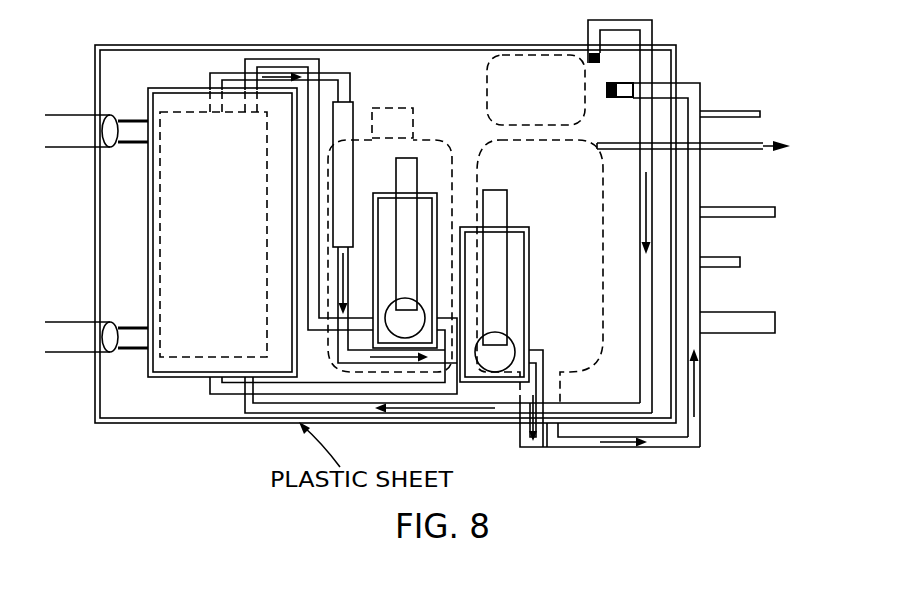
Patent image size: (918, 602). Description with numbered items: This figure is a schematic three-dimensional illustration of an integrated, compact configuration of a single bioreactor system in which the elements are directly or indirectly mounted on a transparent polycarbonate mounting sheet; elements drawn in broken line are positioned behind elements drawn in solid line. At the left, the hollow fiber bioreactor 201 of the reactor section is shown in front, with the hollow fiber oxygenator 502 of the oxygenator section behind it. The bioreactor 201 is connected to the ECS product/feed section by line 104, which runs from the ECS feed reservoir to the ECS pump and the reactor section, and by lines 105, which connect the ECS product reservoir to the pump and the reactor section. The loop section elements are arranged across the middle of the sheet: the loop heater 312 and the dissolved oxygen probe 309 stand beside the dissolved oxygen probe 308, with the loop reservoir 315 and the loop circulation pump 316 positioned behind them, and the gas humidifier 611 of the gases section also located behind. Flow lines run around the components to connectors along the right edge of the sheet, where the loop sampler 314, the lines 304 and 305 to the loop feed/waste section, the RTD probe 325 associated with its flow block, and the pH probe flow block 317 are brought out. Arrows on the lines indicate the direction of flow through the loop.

The line 104 is at (71, 130).
The lines 105 is at (72, 338).
The hollow fiber oxygenator 502 is at (213, 223).
The hollow fiber bioreactor 201 is at (222, 232).
The gas humidifier 611 is at (411, 235).
The loop heater 312 is at (346, 168).
The dissolved oxygen probe 309 is at (404, 216).
The loop circulation pump 316 is at (536, 90).
The loop reservoir 315 is at (540, 271).
The dissolved oxygen probe 308 is at (497, 257).
The loop sampler 314 is at (760, 114).
The line 304 is at (716, 145).
The line 305 is at (777, 212).
The RTD probe 325 is at (740, 262).
The pH probe flow block 317 is at (775, 322).